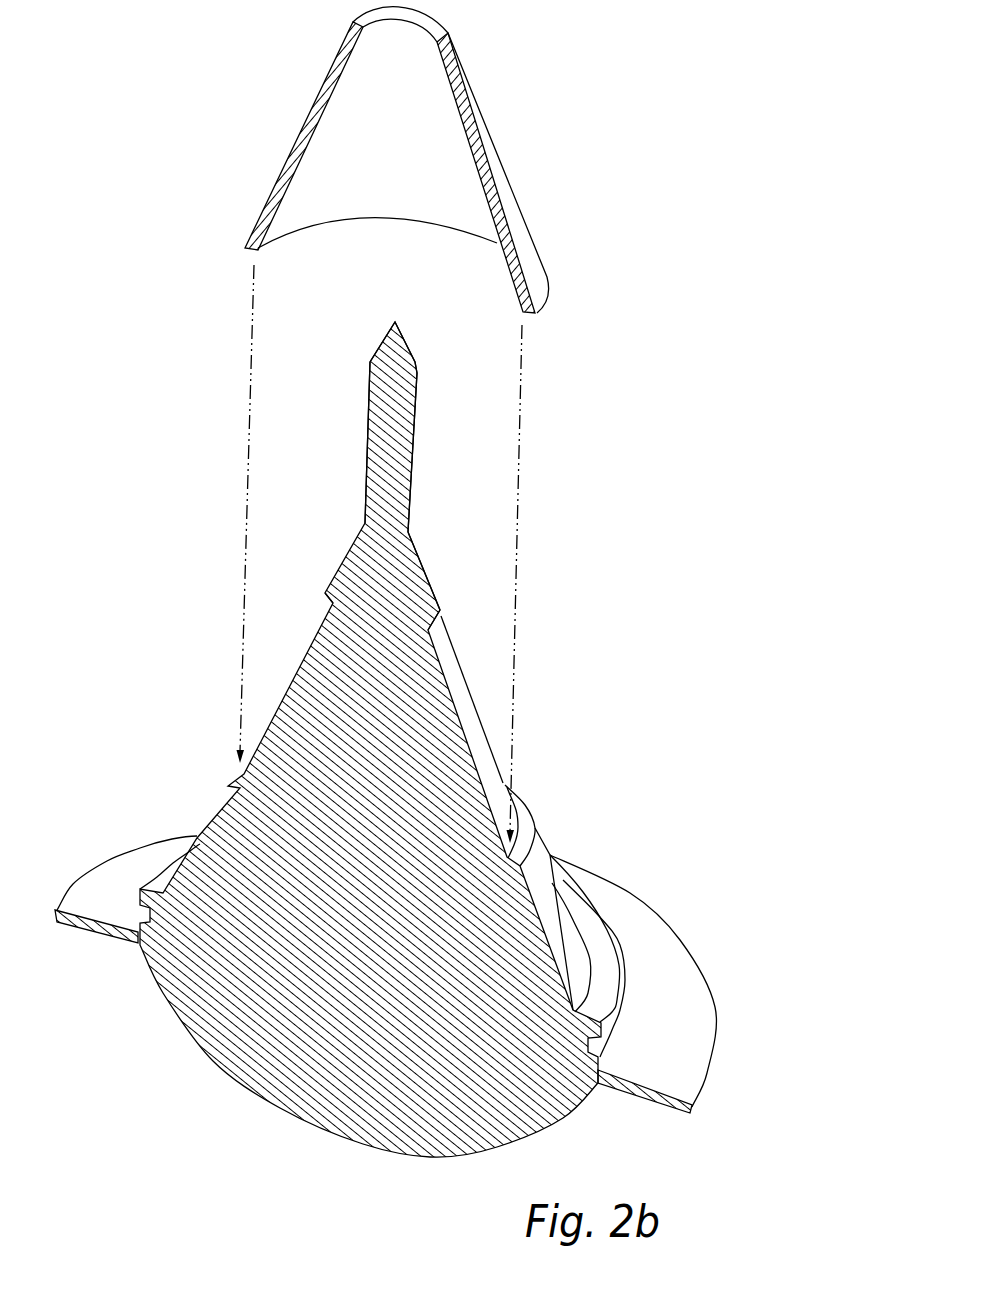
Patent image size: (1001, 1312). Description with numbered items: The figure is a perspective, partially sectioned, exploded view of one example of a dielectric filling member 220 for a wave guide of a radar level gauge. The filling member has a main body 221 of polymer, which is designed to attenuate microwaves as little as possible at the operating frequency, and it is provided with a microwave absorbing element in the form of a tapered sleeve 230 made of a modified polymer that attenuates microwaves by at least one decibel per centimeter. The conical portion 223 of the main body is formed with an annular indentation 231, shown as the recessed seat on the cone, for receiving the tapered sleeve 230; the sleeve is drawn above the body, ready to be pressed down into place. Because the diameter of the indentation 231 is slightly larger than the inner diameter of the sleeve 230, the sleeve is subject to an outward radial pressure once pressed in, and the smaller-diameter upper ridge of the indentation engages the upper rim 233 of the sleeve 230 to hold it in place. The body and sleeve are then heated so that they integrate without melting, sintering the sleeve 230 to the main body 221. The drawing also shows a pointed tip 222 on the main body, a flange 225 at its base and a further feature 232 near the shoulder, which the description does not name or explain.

The dielectric filling member 220 is at (380, 739).
The main body 221 is at (345, 552).
The spike tip 222 is at (407, 470).
The conical portion 223 is at (423, 573).
The flange 225 is at (108, 908).
The tapered sleeve 230 is at (426, 160).
The annular indentation 231 is at (487, 740).
The ring 232 is at (430, 607).
The upper rim 233 is at (458, 50).